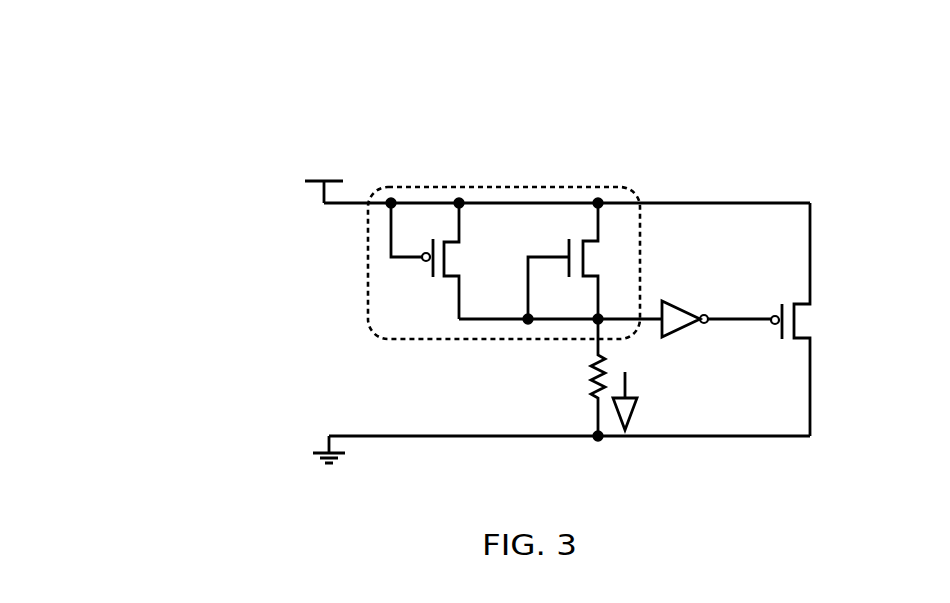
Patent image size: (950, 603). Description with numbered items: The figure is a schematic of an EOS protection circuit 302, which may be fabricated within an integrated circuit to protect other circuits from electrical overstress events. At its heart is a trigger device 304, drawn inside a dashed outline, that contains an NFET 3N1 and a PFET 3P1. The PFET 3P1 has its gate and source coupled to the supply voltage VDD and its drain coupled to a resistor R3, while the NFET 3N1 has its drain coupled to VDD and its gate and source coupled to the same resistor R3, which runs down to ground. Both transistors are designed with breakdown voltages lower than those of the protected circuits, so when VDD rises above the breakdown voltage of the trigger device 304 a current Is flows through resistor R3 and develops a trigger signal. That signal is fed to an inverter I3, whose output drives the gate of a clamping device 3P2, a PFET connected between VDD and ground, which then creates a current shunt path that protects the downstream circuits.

The EOS protection circuit 302 is at (188, 128).
The trigger device 304 is at (338, 273).
The PFET 3P1 is at (446, 261).
The NFET 3N1 is at (580, 261).
The clamping device (PFET) 3P2 is at (778, 319).
The inverter I3 is at (682, 312).
The resistor R3 is at (588, 395).
The current Is is at (625, 388).